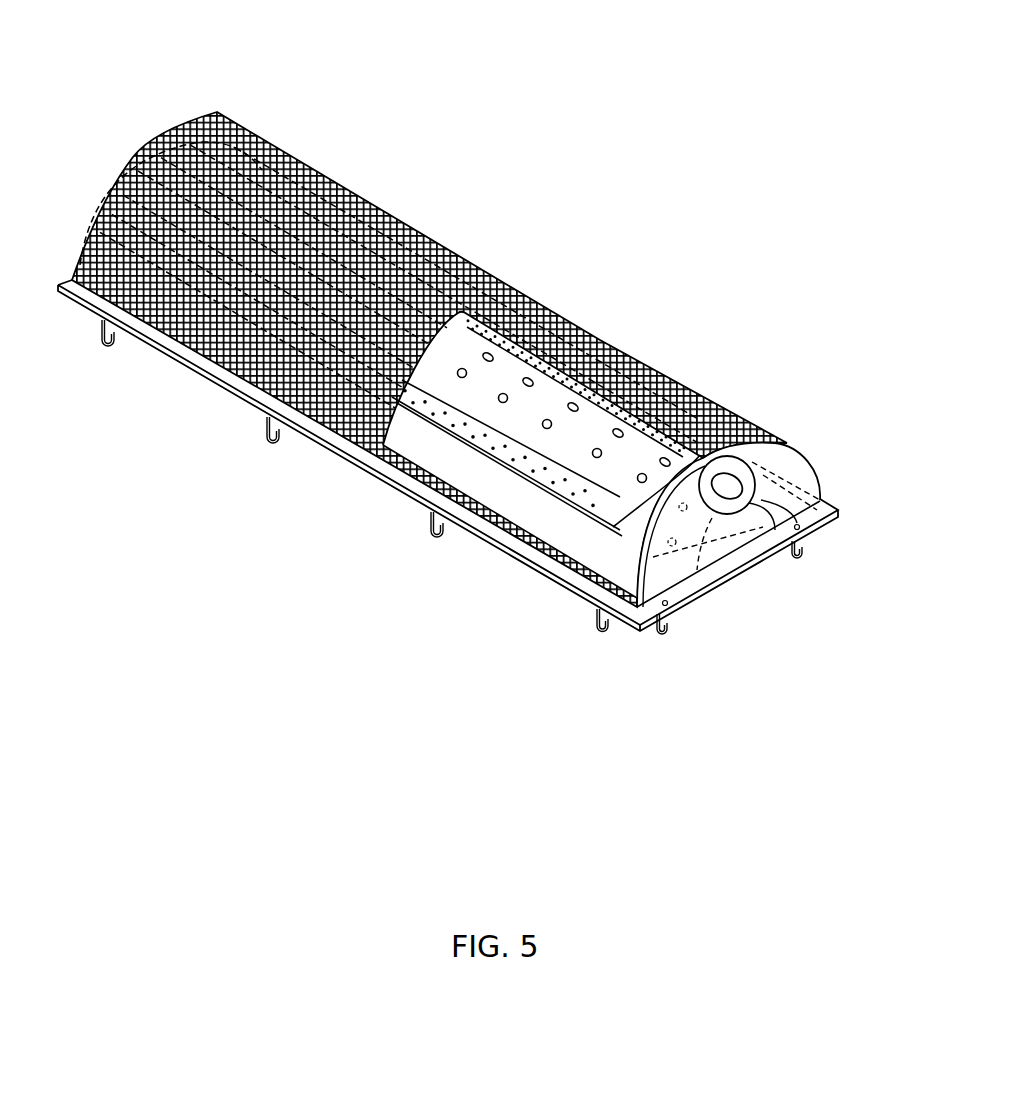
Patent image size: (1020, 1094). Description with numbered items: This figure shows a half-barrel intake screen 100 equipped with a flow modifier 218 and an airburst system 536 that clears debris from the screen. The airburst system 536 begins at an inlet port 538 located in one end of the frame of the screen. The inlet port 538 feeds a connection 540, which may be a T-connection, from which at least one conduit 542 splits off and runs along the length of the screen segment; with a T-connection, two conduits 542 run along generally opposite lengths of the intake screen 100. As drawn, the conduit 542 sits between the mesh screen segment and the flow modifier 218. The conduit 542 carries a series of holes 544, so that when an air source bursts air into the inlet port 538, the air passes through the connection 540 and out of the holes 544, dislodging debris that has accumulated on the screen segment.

The half-barrel intake screen 100 is at (604, 79).
The flow modifier 218 is at (687, 563).
The airburst system 536 is at (757, 485).
The inlet port 538 is at (768, 522).
The connection 540 is at (692, 452).
The conduit 542 is at (510, 335).
The holes 544 is at (455, 422).